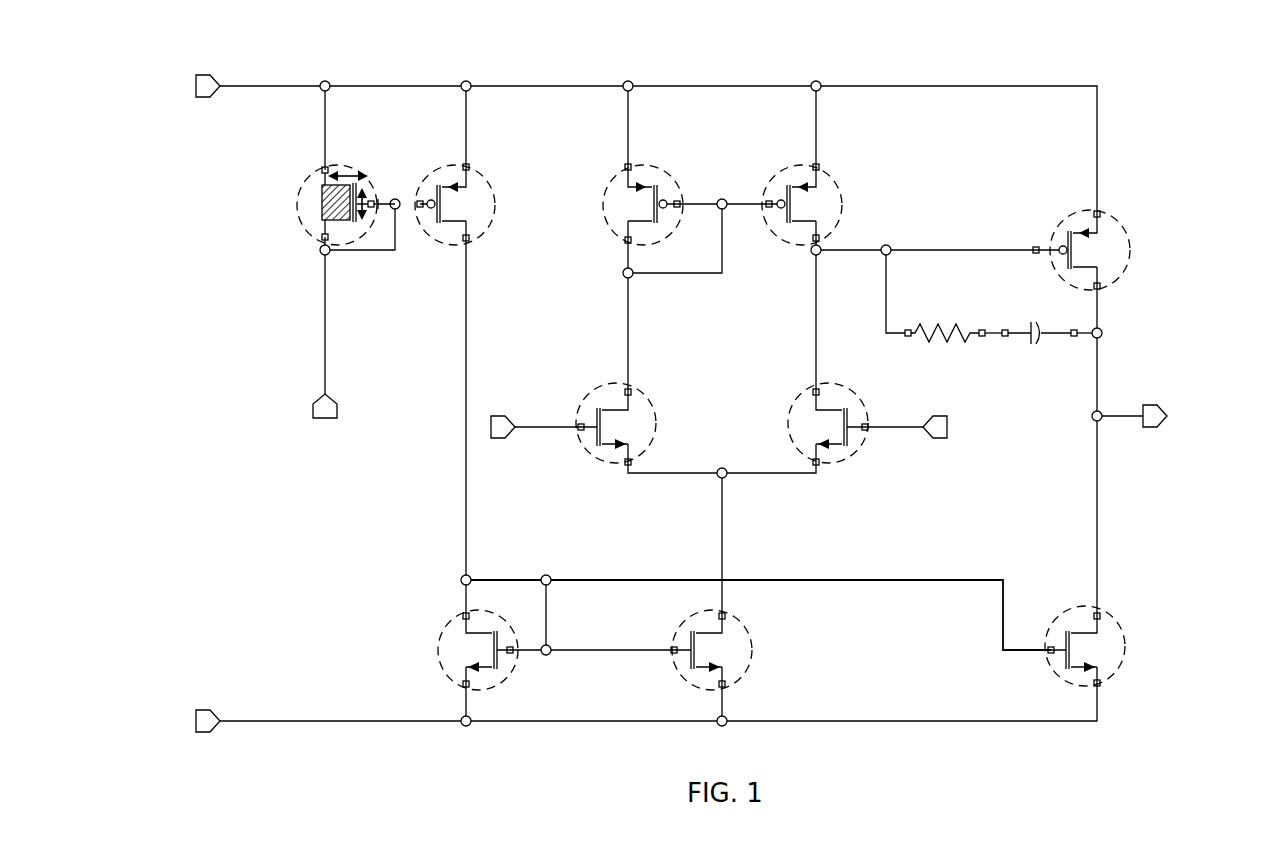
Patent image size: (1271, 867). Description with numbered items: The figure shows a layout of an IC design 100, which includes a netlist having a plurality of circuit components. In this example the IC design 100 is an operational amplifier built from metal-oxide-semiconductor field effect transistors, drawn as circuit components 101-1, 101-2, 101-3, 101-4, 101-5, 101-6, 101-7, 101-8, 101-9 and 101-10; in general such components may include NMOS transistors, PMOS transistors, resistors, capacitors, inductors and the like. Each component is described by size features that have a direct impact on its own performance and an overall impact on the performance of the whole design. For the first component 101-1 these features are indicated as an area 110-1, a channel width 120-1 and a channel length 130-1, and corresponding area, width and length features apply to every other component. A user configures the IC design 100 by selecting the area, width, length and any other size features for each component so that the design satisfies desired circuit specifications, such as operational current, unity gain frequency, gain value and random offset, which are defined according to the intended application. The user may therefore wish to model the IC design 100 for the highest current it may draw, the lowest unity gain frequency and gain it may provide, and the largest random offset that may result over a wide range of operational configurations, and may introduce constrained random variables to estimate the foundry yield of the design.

The IC design 100 is at (163, 53).
The circuit component 101-1 is at (345, 243).
The circuit component 101-2 is at (484, 238).
The circuit component 101-3 is at (660, 172).
The circuit component 101-4 is at (832, 178).
The circuit component 101-5 is at (1120, 226).
The circuit component 101-6 is at (585, 452).
The circuit component 101-7 is at (858, 455).
The circuit component 101-8 is at (450, 622).
The circuit component 101-9 is at (745, 632).
The circuit component 101-10 is at (1118, 622).
The area 110-1 is at (324, 203).
The channel width 120-1 is at (346, 170).
The channel length 130-1 is at (370, 212).